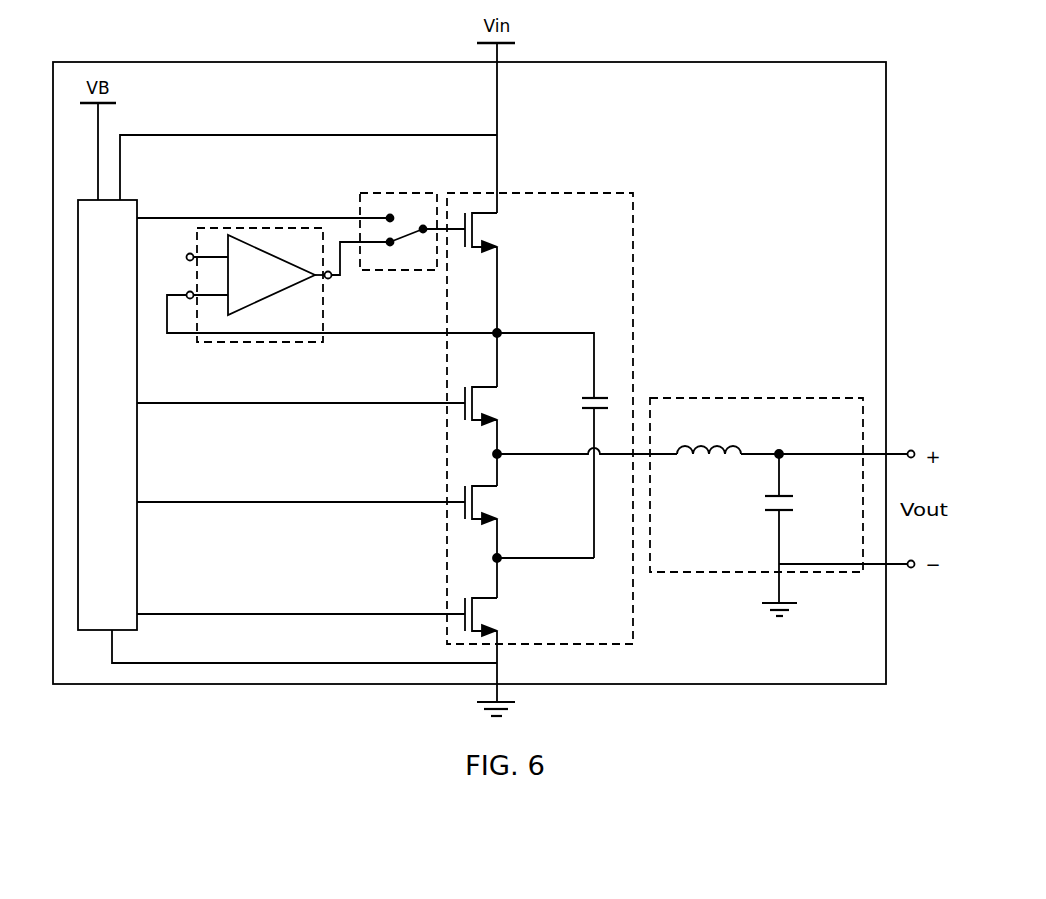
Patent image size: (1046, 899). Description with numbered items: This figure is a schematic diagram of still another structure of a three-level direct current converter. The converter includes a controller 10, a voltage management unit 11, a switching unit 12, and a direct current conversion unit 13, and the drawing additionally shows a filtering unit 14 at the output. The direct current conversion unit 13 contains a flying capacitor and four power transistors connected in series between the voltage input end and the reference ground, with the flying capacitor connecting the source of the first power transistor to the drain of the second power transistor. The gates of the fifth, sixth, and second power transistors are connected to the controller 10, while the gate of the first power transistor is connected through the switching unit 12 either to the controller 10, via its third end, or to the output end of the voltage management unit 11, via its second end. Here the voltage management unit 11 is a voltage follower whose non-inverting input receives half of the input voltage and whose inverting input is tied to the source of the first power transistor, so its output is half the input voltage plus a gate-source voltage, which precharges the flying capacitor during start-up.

The controller 10 is at (107, 415).
The voltage management unit 11 is at (322, 310).
The switching unit 12 is at (395, 211).
The direct current conversion unit 13 is at (615, 422).
The filtering unit 14 is at (778, 491).